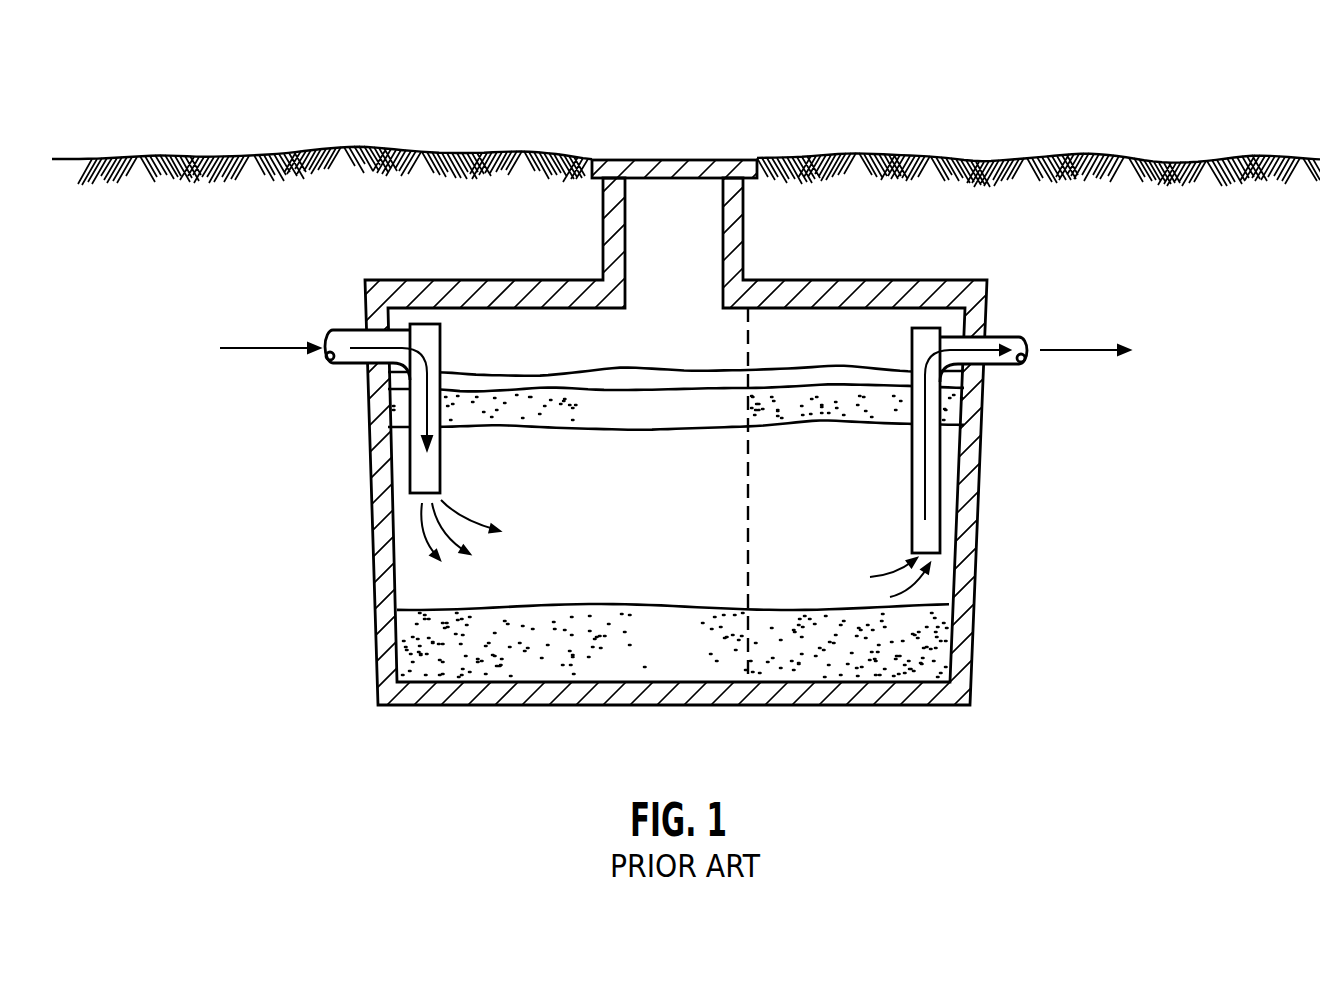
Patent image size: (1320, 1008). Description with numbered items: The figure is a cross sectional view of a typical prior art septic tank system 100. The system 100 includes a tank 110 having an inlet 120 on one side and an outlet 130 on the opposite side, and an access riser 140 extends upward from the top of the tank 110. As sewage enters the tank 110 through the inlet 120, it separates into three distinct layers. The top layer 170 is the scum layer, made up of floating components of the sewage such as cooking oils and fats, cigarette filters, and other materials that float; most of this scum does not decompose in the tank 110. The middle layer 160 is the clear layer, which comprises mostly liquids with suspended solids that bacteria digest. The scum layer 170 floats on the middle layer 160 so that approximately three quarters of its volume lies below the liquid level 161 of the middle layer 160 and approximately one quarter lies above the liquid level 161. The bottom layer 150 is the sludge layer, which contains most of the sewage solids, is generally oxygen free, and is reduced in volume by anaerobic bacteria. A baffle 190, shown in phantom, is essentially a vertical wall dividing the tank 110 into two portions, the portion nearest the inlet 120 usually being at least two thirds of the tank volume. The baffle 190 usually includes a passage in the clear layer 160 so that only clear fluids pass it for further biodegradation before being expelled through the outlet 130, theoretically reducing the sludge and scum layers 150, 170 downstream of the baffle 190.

The septic tank system 100 is at (324, 603).
The tank 110 is at (803, 704).
The inlet 120 is at (348, 364).
The outlet 130 is at (1013, 367).
The access riser 140 is at (711, 158).
The bottom layer 150 is at (682, 656).
The middle layer 160 is at (687, 530).
The liquid level 161 is at (639, 390).
The top layer 170 is at (650, 421).
The baffle 190 is at (748, 492).